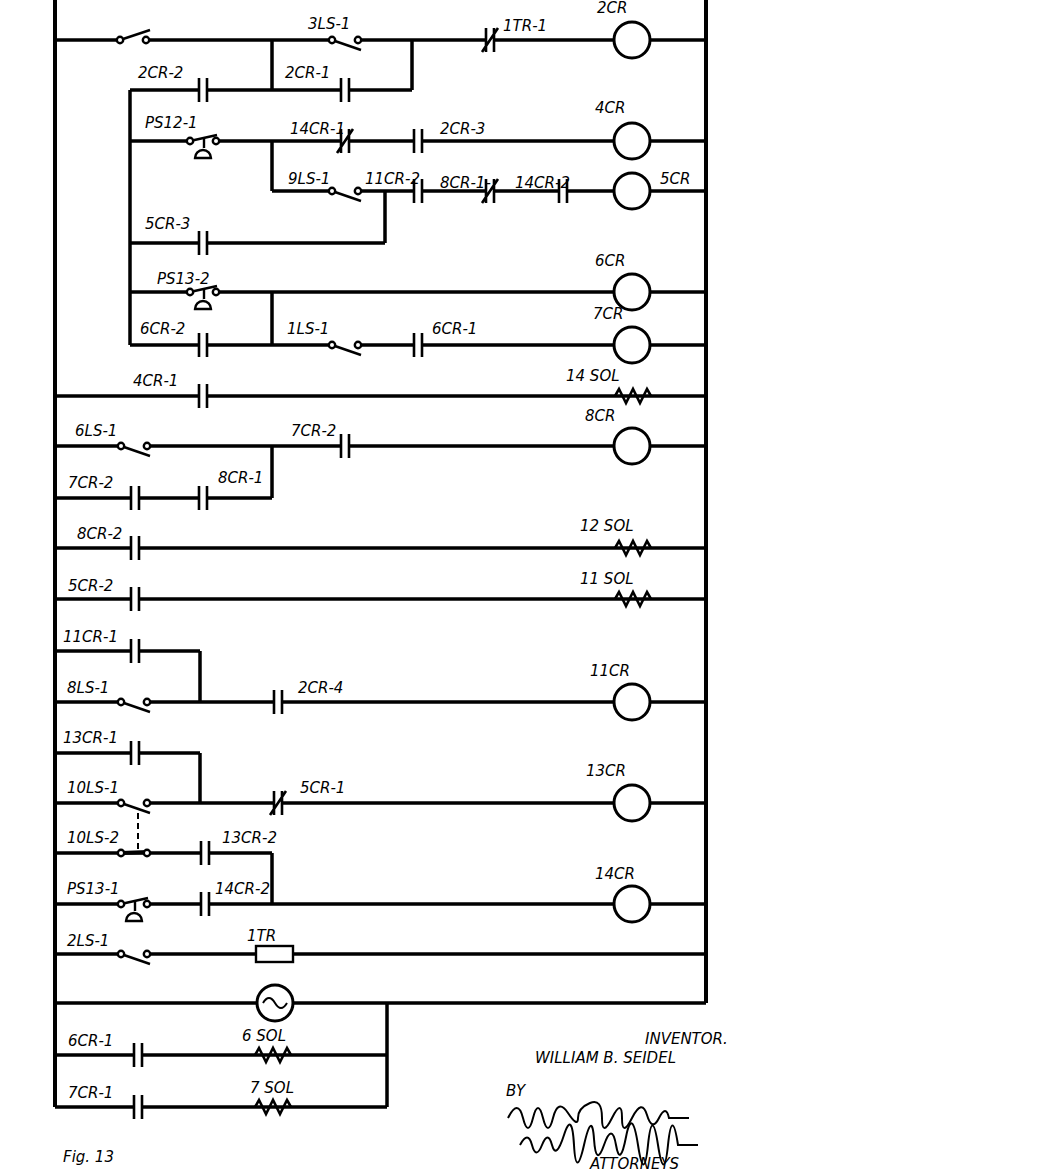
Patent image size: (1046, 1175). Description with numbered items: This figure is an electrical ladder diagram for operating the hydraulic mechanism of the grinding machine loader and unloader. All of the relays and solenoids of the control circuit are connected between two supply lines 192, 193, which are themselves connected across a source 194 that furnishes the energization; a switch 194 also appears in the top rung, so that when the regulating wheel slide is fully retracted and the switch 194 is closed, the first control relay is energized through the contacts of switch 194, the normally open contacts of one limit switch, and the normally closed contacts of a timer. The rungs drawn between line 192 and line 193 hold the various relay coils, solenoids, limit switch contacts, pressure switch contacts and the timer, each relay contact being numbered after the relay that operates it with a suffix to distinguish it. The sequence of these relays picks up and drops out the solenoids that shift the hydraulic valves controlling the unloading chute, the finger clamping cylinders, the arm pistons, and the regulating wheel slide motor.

The line 192 is at (54, 930).
The line 193 is at (707, 729).
The source 194 is at (152, 32).